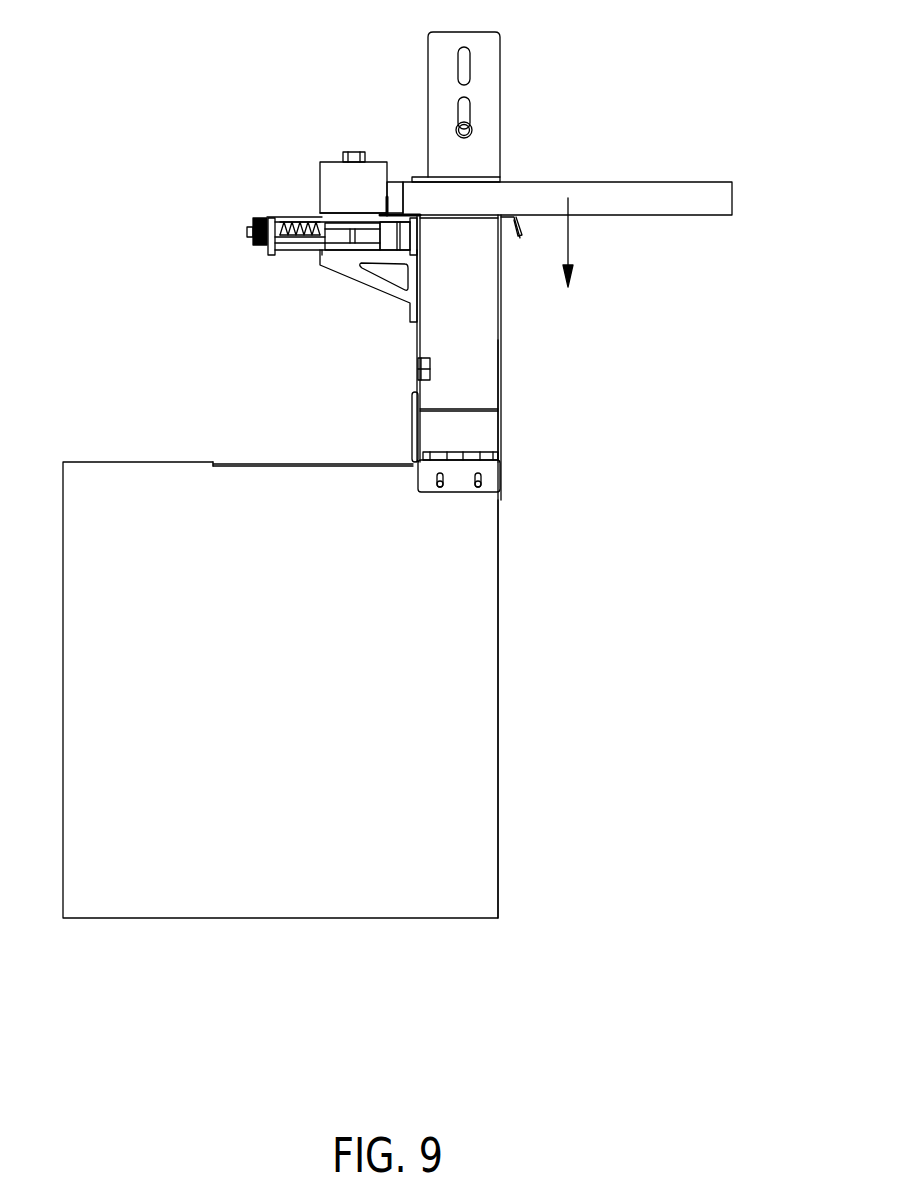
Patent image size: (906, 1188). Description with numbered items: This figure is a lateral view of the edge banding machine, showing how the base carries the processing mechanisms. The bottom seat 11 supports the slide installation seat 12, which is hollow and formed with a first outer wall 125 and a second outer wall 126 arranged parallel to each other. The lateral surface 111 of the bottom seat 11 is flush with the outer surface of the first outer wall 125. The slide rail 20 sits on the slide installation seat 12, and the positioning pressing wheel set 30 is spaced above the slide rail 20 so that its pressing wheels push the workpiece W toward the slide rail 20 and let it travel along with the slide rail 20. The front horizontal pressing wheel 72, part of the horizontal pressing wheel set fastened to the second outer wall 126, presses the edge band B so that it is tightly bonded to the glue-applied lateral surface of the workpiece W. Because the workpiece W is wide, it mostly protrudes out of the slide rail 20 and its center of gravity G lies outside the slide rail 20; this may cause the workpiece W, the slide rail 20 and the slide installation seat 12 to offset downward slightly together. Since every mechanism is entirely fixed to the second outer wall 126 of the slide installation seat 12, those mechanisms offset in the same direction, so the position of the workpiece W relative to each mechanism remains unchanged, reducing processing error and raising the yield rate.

The bottom seat 11 is at (338, 690).
The lateral surface 111 is at (498, 677).
The slide installation seat 12 is at (380, 374).
The first outer wall 125 is at (500, 342).
The second outer wall 126 is at (417, 338).
The slide rail 20 is at (460, 217).
The positioning pressing wheel set 30 is at (488, 83).
The front horizontal pressing wheel 72 is at (337, 185).
The edge band B is at (398, 192).
The workpiece to be processed W is at (703, 192).
The center of gravity G is at (568, 261).